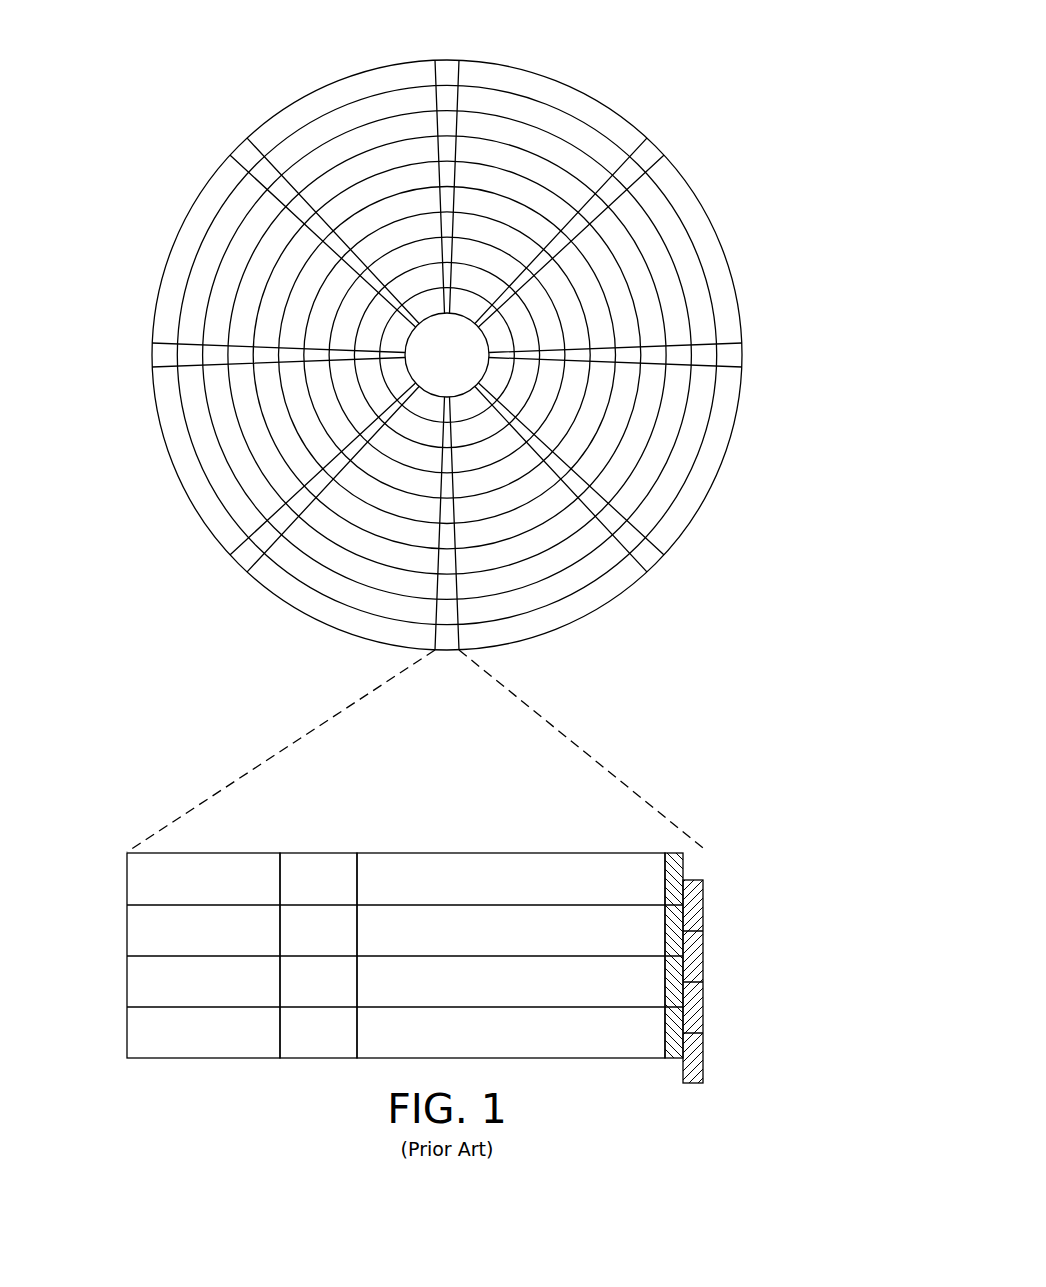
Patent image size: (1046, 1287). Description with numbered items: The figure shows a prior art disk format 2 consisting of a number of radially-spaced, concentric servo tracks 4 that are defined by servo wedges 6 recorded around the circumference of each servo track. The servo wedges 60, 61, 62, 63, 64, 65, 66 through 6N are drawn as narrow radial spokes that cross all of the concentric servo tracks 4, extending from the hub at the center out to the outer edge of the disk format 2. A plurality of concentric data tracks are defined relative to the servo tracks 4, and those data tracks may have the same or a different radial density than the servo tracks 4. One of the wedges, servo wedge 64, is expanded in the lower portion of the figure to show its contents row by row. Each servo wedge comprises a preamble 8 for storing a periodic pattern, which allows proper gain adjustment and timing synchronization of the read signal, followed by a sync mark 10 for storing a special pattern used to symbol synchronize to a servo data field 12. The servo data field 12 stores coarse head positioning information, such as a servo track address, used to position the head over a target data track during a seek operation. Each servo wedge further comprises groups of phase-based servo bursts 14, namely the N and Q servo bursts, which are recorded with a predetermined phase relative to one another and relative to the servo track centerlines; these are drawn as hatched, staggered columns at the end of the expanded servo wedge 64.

The disk format 2 is at (228, 63).
The servo tracks 4 is at (550, 112).
The servo wedges 6 is at (448, 364).
The servo wedge 60 is at (447, 70).
The servo wedge 61 is at (650, 153).
The servo wedge 62 is at (740, 356).
The servo wedge 63 is at (648, 556).
The servo wedge 64 is at (316, 718).
The servo wedge 65 is at (240, 558).
The servo wedge 66 is at (160, 355).
The servo wedge 6N is at (248, 147).
The preamble 8 is at (211, 853).
The sync mark 10 is at (321, 853).
The servo data field 12 is at (501, 853).
The servo bursts 14 is at (700, 851).